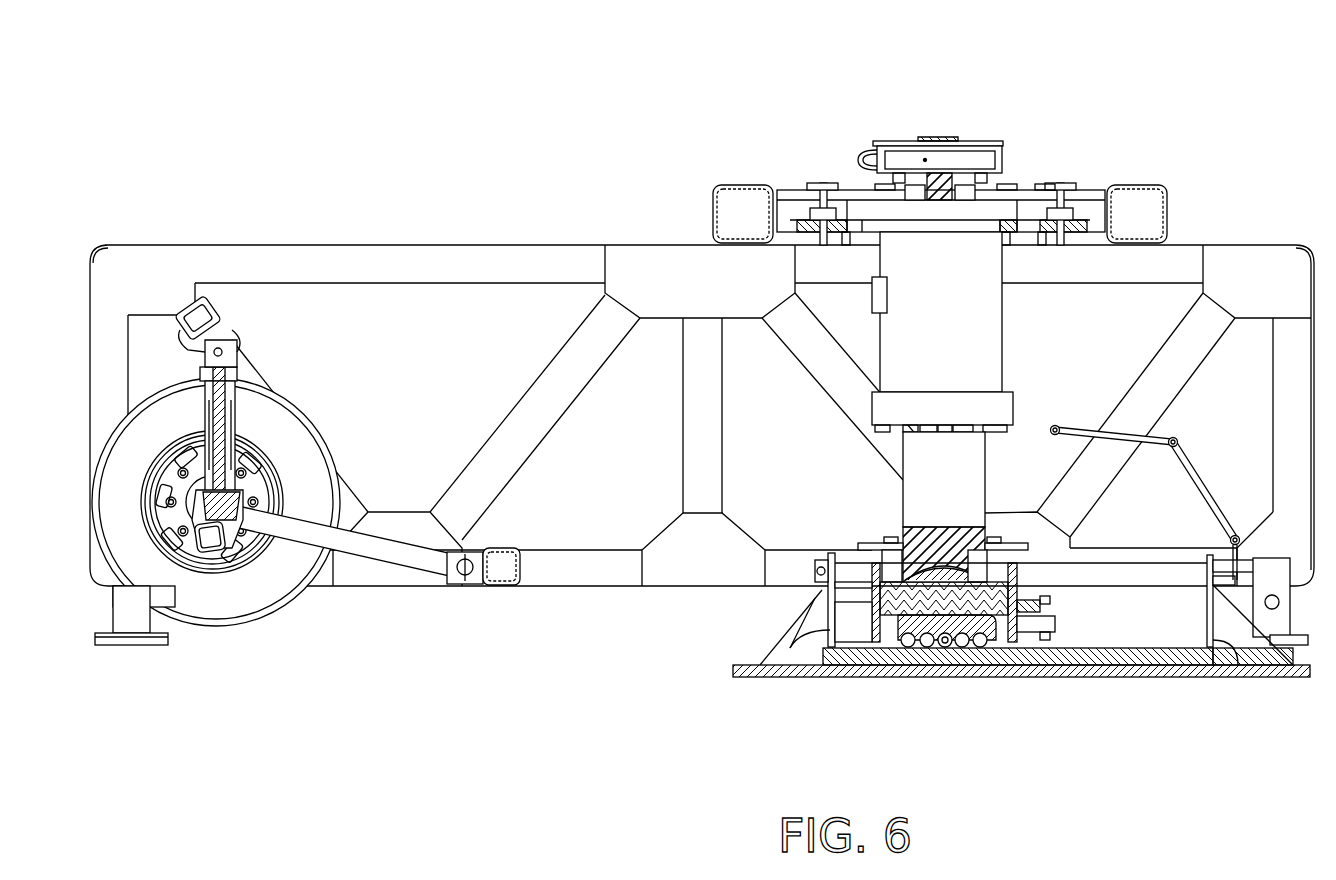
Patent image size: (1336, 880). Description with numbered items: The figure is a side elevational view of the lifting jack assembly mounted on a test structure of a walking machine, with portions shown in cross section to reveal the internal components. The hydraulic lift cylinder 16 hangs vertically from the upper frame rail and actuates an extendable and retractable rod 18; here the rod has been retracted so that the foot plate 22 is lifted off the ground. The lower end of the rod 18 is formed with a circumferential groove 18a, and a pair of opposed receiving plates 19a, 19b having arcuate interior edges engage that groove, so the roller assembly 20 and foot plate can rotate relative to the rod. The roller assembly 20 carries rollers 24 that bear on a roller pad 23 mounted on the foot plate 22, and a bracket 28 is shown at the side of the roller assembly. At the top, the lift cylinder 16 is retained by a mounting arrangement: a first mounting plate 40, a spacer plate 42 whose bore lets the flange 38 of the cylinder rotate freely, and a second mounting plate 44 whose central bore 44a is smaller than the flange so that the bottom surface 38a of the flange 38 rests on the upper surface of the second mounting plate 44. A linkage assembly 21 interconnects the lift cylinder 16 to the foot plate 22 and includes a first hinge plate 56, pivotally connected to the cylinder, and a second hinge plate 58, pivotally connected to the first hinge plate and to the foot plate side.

The lift cylinder 16 is at (990, 327).
The rod 18 is at (913, 455).
The circumferential groove 18a is at (963, 560).
The receiving plate 19a is at (1015, 537).
The receiving plate 19b is at (870, 540).
The roller assembly 20 is at (893, 605).
The linkage assembly 21 is at (1143, 410).
The foot plate 22 is at (778, 677).
The roller pad 23 is at (1097, 655).
The rollers 24 is at (960, 648).
The bracket 28 is at (852, 633).
The flange 38 is at (846, 205).
The bottom surface 38a is at (864, 225).
The first mounting plate 40 is at (790, 193).
The spacer plate 42 is at (806, 208).
The second mounting plate 44 is at (790, 227).
The central bore 44a is at (1003, 225).
The first hinge plate 56 is at (1080, 427).
The second hinge plate 58 is at (1200, 477).